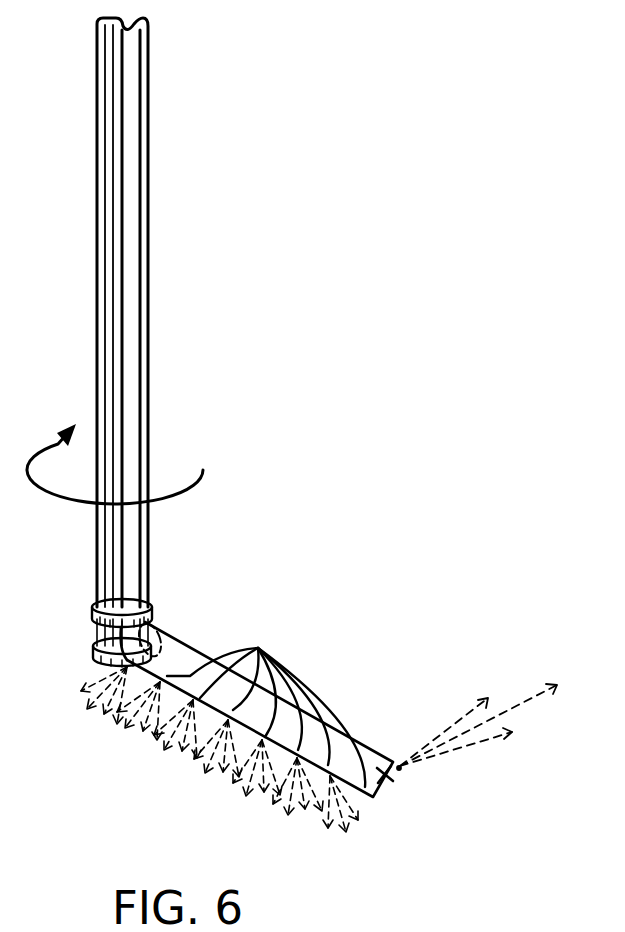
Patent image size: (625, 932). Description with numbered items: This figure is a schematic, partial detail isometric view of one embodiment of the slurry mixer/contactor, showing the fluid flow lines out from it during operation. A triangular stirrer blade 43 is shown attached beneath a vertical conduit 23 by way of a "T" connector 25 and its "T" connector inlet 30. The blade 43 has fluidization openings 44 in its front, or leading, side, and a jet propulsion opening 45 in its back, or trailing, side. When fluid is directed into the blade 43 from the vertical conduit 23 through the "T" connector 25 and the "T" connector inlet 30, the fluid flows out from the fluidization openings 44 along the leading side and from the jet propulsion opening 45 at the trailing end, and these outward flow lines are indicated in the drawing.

The vertical conduit 23 is at (148, 340).
The "T" connector 25 is at (97, 638).
The "T" connector inlet 30 is at (162, 636).
The triangular stirrer blade 43 is at (393, 781).
The fluidization openings 44 is at (262, 645).
The jet propulsion opening 45 is at (402, 760).